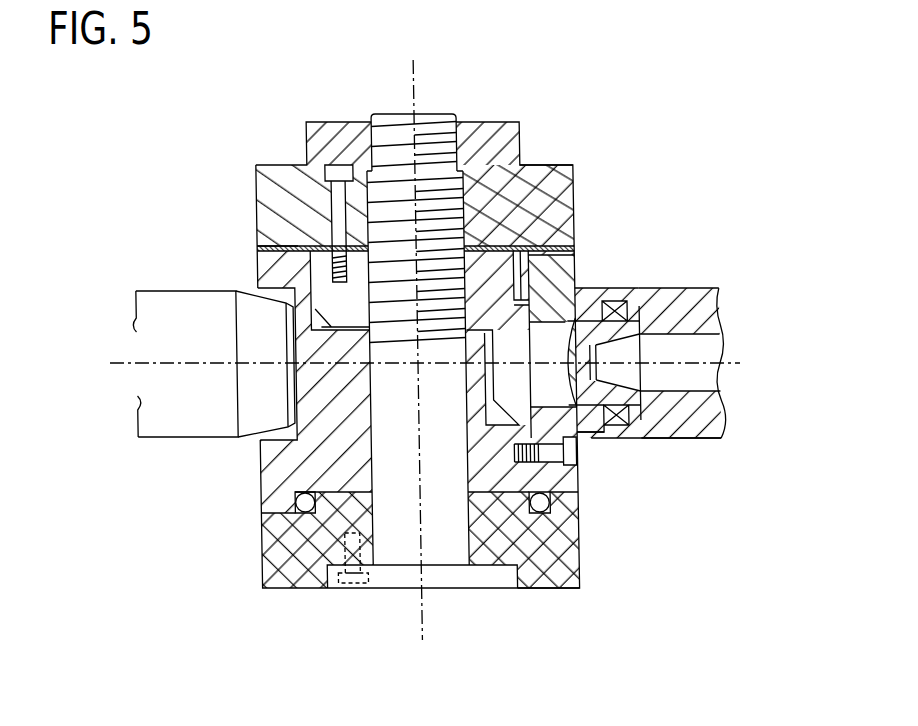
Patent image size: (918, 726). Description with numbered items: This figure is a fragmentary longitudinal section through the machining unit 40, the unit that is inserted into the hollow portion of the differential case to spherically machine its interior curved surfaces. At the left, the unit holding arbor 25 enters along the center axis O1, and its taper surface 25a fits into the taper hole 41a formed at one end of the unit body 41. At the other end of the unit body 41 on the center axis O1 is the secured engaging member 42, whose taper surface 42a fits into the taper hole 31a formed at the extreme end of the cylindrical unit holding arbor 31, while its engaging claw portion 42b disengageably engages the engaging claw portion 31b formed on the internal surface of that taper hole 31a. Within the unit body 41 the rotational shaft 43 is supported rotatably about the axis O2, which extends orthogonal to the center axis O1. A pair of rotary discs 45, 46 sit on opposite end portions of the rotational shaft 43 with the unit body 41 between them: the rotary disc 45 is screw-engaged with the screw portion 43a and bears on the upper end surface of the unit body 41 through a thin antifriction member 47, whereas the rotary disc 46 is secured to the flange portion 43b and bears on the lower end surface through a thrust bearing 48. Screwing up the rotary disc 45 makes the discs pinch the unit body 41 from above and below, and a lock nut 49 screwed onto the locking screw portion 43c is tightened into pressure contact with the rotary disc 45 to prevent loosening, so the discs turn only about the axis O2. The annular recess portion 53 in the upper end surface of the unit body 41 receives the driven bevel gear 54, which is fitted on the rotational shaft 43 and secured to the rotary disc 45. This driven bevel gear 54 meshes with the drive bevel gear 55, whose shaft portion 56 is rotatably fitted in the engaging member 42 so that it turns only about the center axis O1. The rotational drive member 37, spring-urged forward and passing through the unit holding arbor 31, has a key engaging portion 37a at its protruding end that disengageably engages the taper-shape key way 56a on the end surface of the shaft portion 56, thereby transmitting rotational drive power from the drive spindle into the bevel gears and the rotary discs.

The unit holding arbor 25 is at (175, 306).
The taper surface 25a is at (252, 302).
The unit holding arbor 31 is at (701, 299).
The taper hole 31a is at (581, 431).
The engaging claw portion 31b is at (658, 437).
The rotational drive member 37 is at (706, 404).
The key engaging portion 37a is at (683, 438).
The machining unit 40 is at (553, 121).
The unit body 41 is at (335, 485).
The taper hole 41a is at (234, 422).
The engaging member 42 is at (564, 248).
The taper surface 42a is at (623, 299).
The engaging claw portion 42b is at (619, 421).
The rotational shaft 43 is at (470, 535).
The screw portion 43a is at (538, 177).
The flange portion 43b is at (395, 588).
The locking screw portion 43c is at (445, 122).
The rotary disc 45 is at (276, 170).
The rotary disc 46 is at (538, 589).
The antifriction member 47 is at (266, 246).
The thrust bearing 48 is at (293, 503).
The lock nut 49 is at (333, 130).
The annular recess portion 53 is at (320, 330).
The driven bevel gear 54 is at (560, 214).
The drive bevel gear 55 is at (503, 380).
The shaft portion 56 is at (578, 330).
The taper-shape key way 56a is at (606, 301).
The center axis O1 is at (401, 364).
The axis O2 is at (420, 335).